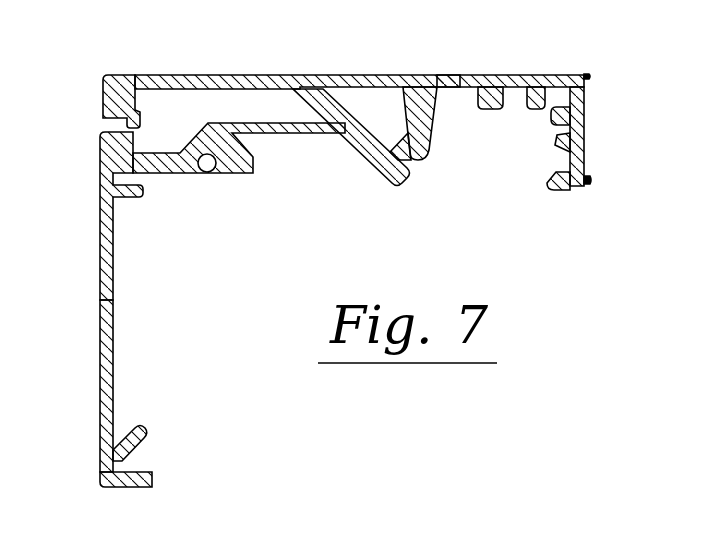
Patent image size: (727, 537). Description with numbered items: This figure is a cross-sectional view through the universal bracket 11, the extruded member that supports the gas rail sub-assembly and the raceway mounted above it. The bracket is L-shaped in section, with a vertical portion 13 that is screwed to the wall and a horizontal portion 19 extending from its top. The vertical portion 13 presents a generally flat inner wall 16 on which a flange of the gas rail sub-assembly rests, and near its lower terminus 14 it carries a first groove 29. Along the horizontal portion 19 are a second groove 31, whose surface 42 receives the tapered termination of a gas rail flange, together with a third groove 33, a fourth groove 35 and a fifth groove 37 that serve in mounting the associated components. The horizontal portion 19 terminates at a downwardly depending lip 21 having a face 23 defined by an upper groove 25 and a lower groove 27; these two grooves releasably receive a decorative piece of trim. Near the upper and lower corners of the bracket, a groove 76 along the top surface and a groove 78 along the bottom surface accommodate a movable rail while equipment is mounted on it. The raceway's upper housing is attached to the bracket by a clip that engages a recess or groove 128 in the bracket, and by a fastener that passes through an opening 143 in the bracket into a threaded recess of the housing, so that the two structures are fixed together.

The universal bracket 11 is at (305, 67).
The recess or groove 128 is at (113, 118).
The vertical portion 13 is at (100, 283).
The flat inner wall 16 is at (113, 326).
The lower terminus 14 is at (128, 488).
The first groove 29 is at (136, 466).
The second groove 31 is at (232, 147).
The surface of the groove 42 is at (247, 160).
The opening 143 is at (413, 76).
The third groove 33 is at (414, 158).
The horizontal portion 19 is at (430, 75).
The fourth groove 35 is at (480, 105).
The fifth groove 37 is at (547, 108).
The groove 76 is at (569, 73).
The upper groove 25 is at (590, 76).
The downwardly depending lip 21 is at (584, 117).
The face 23 is at (584, 137).
The lower groove 27 is at (590, 181).
The groove 78 is at (560, 190).